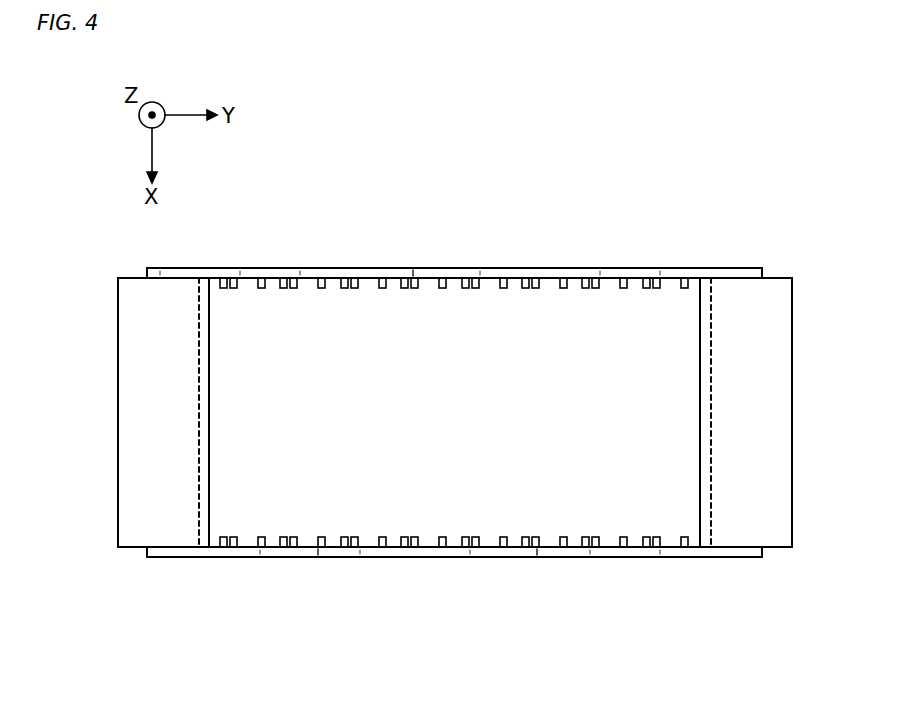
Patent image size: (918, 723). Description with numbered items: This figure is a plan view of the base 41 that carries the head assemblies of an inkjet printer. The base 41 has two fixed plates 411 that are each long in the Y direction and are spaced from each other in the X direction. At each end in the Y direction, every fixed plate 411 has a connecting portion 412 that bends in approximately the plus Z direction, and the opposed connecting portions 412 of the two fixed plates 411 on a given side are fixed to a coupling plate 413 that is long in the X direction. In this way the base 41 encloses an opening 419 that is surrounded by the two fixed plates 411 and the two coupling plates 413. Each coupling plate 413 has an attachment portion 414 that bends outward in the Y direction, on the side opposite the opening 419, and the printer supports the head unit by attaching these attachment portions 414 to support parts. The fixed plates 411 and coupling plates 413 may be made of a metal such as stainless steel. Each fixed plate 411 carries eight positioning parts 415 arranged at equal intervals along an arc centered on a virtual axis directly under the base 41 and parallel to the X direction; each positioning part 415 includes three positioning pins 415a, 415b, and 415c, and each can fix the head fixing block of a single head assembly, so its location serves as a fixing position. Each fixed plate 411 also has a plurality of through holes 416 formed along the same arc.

The base 41 is at (538, 136).
The fixed plate 411 is at (462, 268).
The connecting portion 412 is at (180, 268).
The coupling plate 413 is at (199, 500).
The attachment portion 414 is at (168, 308).
The positioning part 415 is at (435, 418).
The positioning pin 415a is at (292, 278).
The positioning pin 415b is at (322, 278).
The positioning pin 415c is at (283, 278).
The through hole 416 is at (413, 268).
The opening 419 is at (477, 425).